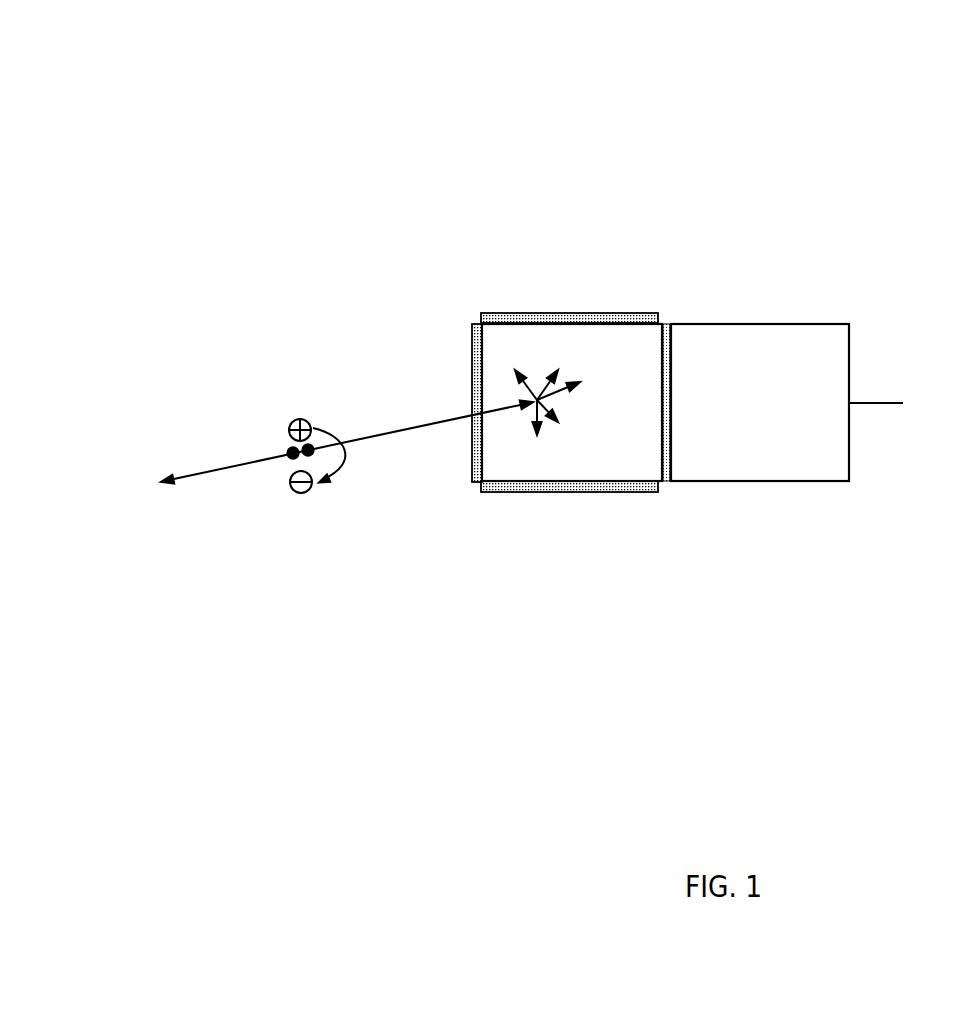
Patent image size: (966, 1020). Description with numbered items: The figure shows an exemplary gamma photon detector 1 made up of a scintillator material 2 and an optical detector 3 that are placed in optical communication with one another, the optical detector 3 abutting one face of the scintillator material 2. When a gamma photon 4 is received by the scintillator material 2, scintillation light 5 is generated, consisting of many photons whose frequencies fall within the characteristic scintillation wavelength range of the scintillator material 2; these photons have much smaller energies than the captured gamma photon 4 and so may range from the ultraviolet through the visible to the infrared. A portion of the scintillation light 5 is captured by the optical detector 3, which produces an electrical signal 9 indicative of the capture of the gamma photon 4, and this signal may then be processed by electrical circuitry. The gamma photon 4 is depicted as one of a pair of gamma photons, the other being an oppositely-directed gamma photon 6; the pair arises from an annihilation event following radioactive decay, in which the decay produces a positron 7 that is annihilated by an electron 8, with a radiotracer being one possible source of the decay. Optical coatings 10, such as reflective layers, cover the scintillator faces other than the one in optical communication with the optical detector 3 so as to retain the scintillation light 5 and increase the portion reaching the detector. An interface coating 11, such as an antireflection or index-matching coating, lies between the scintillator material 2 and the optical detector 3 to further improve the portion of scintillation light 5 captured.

The gamma photon detector 1 is at (780, 142).
The scintillator material 2 is at (548, 357).
The optical detector 3 is at (753, 363).
The gamma photon 4 is at (333, 452).
The scintillation light 5 is at (548, 432).
The oppositely-directed gamma photon 6 is at (268, 450).
The positron 7 is at (308, 417).
The electron 8 is at (297, 497).
The electrical signal 9 is at (872, 398).
The optical coatings 10 is at (503, 318).
The interface coating 11 is at (663, 368).